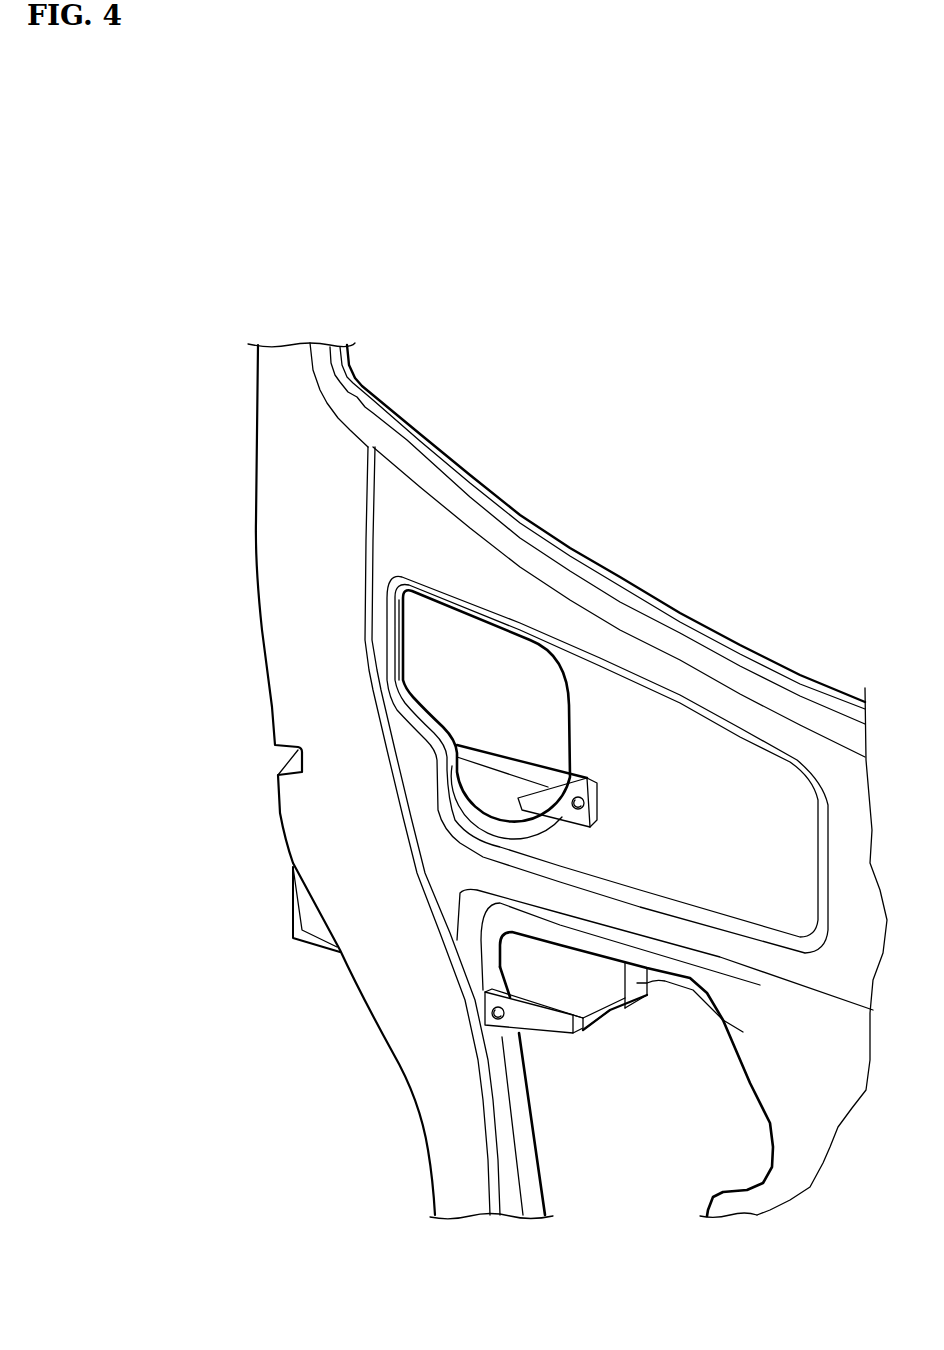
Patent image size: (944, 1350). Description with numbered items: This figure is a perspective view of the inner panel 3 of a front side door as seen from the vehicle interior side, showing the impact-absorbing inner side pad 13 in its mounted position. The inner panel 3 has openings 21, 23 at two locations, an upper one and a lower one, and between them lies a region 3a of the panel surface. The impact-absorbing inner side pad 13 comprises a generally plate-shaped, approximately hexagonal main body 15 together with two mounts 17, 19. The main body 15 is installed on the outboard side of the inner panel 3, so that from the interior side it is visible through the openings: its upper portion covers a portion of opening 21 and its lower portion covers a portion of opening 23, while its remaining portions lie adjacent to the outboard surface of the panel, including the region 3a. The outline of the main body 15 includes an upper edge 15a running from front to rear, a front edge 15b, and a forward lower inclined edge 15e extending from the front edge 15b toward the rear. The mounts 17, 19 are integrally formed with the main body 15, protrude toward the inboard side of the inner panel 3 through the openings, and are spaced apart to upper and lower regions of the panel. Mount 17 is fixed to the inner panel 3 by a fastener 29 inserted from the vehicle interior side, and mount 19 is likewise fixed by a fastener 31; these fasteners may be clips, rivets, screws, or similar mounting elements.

The inner panel 3 is at (290, 490).
The region extending between openings 3a is at (498, 877).
The opening 21 is at (470, 667).
The opening 23 is at (724, 1134).
The main body 15 is at (570, 983).
The upper edge 15a is at (517, 761).
The front edge 15b is at (743, 1032).
The forward lower inclined edge 15e is at (597, 1017).
The impact-absorbing inner side pad 13 is at (617, 1008).
The mount 17 is at (581, 780).
The mount 19 is at (522, 1027).
The fastener 29 is at (583, 806).
The fastener 31 is at (492, 1015).